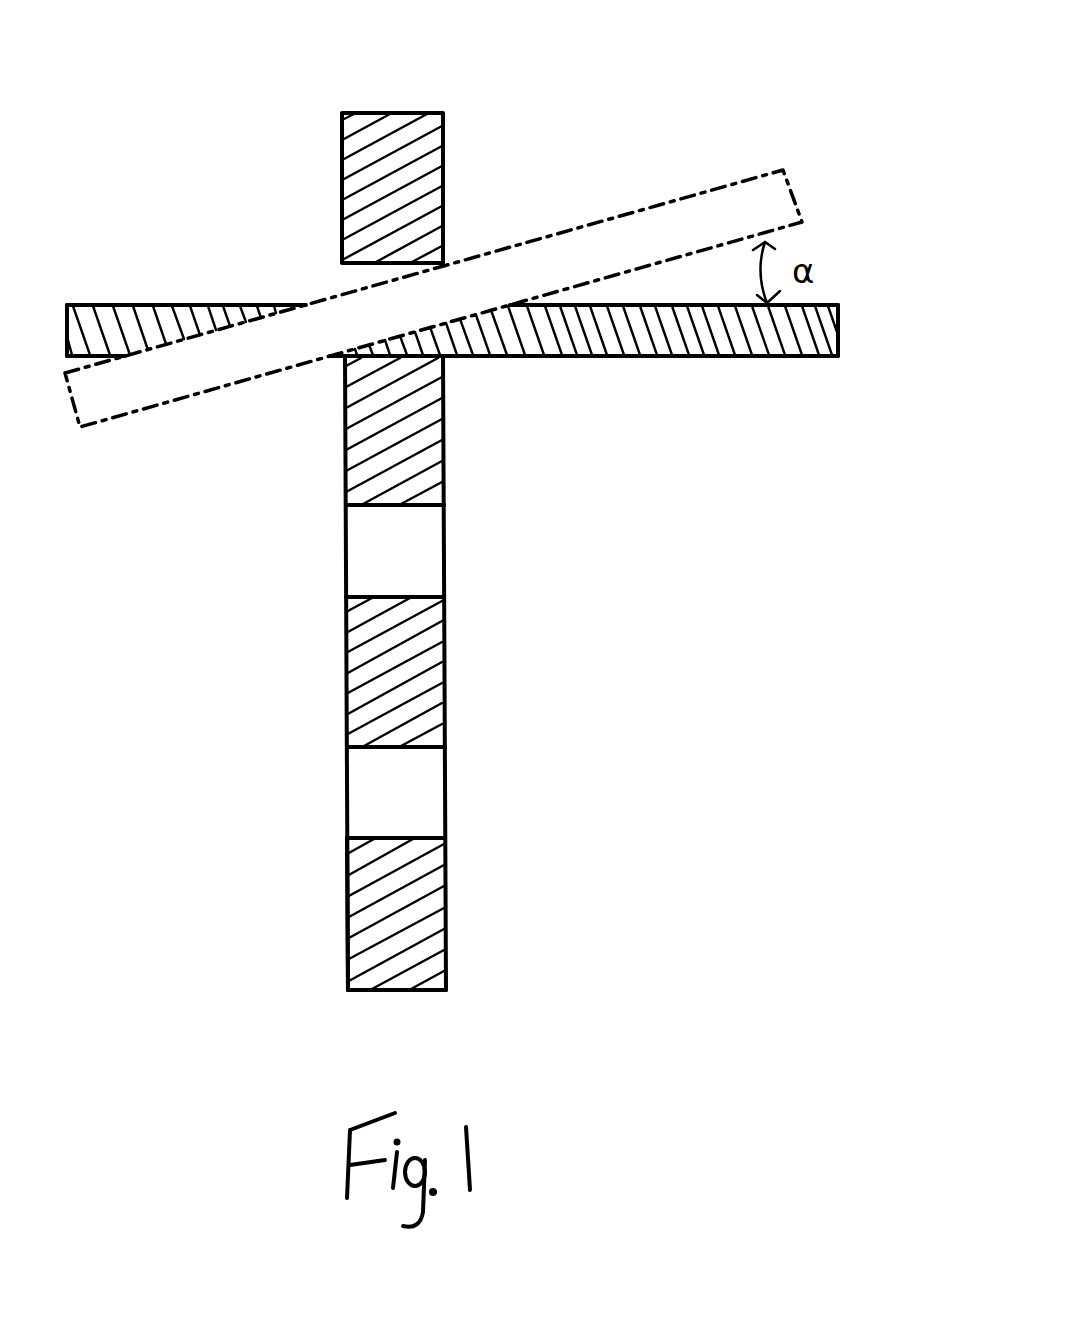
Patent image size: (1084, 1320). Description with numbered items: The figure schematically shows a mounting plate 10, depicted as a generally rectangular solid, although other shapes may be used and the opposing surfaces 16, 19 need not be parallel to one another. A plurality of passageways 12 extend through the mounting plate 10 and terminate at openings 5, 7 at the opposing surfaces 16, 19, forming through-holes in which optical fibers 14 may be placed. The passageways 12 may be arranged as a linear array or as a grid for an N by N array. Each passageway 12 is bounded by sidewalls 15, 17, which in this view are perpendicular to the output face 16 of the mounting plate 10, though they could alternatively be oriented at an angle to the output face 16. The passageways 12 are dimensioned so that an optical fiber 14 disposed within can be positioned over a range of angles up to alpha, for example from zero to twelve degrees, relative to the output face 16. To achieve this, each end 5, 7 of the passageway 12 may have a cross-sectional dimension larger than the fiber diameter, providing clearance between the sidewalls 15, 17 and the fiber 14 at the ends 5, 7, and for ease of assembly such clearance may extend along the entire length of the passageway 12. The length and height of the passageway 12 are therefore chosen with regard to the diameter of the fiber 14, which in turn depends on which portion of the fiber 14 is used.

The opening 5 is at (345, 548).
The opening 7 is at (446, 523).
The mounting plate 10 is at (428, 105).
The passageway 12 is at (342, 272).
The optical fiber 14 is at (797, 193).
The sidewall 15 is at (418, 745).
The output face 16 is at (347, 938).
The sidewall 17 is at (427, 840).
The opposing surface 19 is at (448, 937).